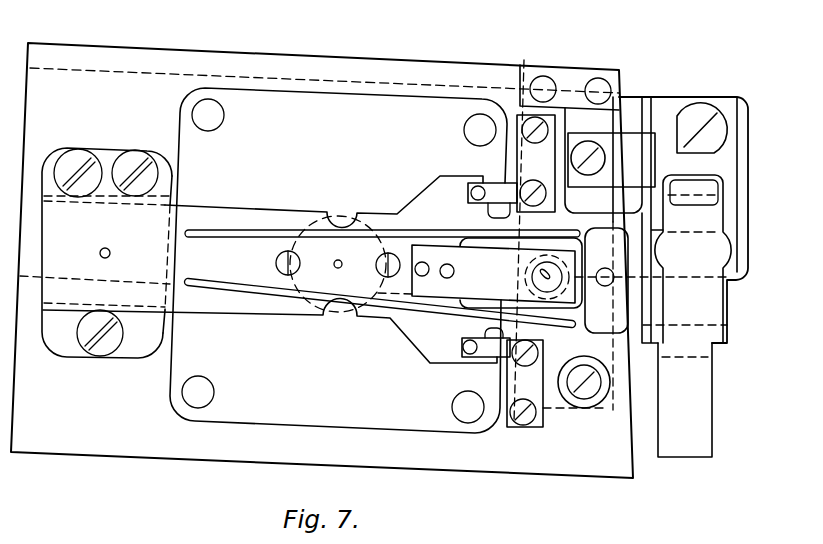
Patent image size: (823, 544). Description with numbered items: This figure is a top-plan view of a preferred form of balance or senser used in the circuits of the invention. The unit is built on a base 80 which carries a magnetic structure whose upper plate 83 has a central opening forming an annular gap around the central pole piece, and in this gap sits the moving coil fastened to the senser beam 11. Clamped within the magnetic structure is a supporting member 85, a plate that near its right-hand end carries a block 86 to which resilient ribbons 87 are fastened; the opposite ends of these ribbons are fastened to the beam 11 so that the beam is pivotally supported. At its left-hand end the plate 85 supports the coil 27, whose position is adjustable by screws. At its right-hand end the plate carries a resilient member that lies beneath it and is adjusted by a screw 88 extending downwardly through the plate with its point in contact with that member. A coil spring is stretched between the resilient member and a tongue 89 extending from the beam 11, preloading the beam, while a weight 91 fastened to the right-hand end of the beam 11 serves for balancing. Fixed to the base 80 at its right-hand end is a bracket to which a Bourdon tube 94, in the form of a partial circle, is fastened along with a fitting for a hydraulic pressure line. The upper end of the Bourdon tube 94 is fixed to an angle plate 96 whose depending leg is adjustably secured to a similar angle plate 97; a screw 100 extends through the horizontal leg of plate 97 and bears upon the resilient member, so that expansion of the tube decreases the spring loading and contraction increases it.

The beam 11 is at (306, 212).
The coil 27 is at (127, 352).
The base 80 is at (143, 88).
The upper plate 83 is at (282, 391).
The supporting member 85 is at (156, 446).
The block 86 is at (533, 424).
The resilient ribbons 87 is at (492, 182).
The screw 88 is at (585, 399).
The tongue 89 is at (508, 283).
The weight 91 is at (612, 334).
The Bourdon tube 94 is at (707, 217).
The angle plate 96 is at (720, 164).
The angle plate 97 is at (632, 144).
The screw 100 is at (582, 145).